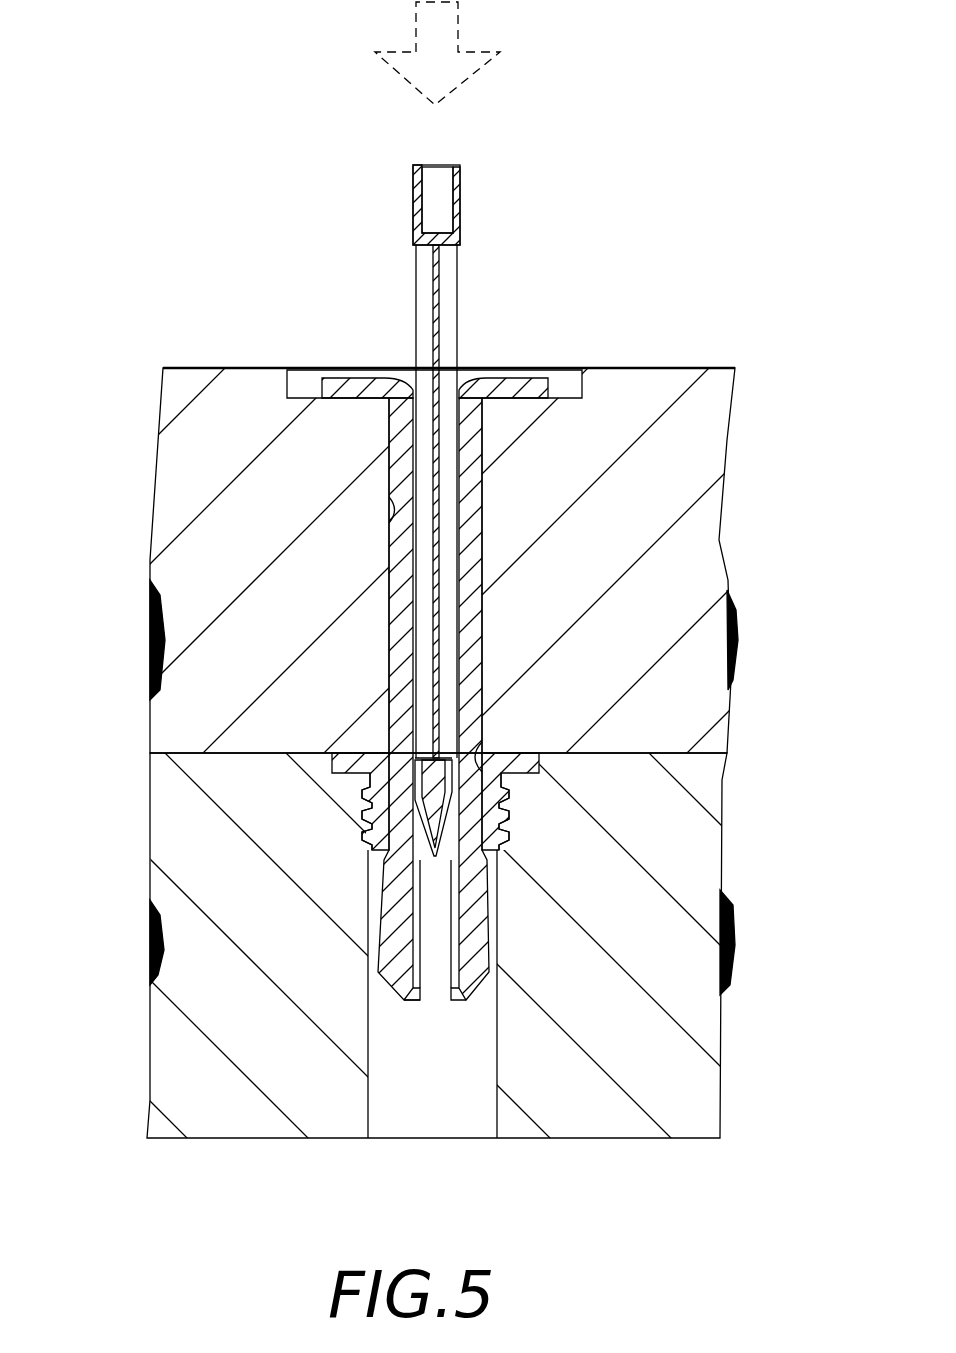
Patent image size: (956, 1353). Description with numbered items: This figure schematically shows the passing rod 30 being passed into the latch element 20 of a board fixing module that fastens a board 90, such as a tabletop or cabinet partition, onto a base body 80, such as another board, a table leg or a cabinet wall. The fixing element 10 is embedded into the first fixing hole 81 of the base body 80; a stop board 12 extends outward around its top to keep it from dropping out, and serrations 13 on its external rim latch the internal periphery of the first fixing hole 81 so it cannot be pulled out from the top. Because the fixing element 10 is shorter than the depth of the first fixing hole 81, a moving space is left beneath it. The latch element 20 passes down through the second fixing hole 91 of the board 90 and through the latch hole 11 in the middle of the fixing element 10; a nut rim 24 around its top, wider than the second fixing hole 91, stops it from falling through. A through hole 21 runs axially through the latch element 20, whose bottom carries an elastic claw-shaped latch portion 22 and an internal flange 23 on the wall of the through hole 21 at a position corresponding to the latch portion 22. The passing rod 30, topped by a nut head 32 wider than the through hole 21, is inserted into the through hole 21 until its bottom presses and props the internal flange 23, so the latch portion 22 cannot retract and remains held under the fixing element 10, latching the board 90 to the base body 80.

The fixing element 10 is at (512, 792).
The latch hole 11 is at (482, 742).
The stop board 12 is at (345, 755).
The serrations 13 is at (365, 800).
The latch element 20 is at (317, 364).
The through hole 21 is at (435, 903).
The latch portion 22 is at (378, 975).
The internal flange 23 is at (422, 1000).
The nut rim 24 is at (527, 370).
The passing rod 30 is at (464, 284).
The nut head 32 is at (412, 206).
The base body 80 is at (175, 1066).
The first fixing hole 81 is at (485, 1105).
The board 90 is at (693, 480).
The second fixing hole 91 is at (393, 503).